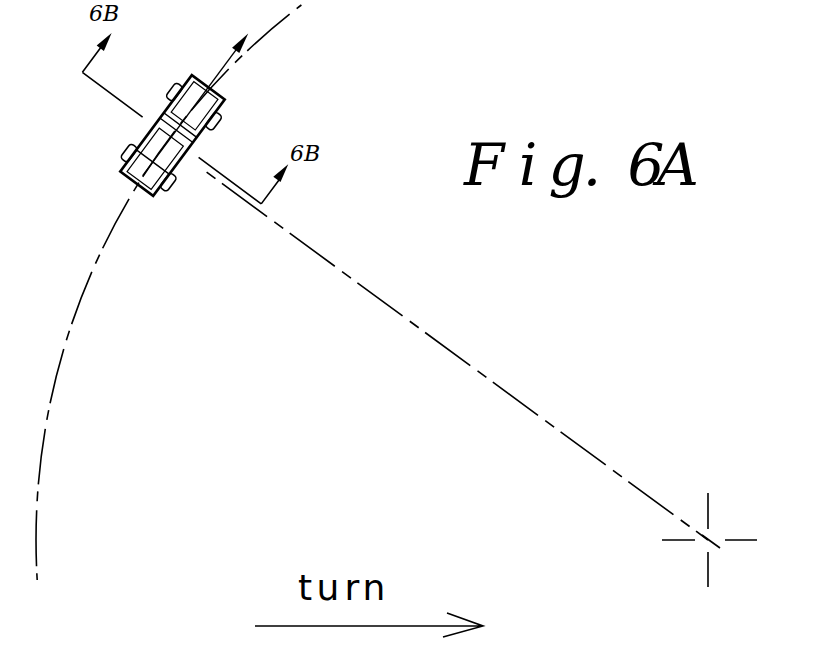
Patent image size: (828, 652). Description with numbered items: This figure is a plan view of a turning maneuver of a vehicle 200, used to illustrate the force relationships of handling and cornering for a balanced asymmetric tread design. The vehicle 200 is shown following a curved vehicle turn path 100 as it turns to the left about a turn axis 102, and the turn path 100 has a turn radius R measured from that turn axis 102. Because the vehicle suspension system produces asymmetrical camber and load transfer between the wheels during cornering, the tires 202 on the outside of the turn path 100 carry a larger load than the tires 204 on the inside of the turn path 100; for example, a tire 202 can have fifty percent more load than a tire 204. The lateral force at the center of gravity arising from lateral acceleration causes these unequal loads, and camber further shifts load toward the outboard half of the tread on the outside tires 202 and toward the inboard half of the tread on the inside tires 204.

The vehicle turn path 100 is at (297, 5).
The turn axis 102 is at (709, 538).
The vehicle 200 is at (120, 188).
The tires on the outside of the turn path 202 is at (172, 93).
The tires on the inside of the turn path 204 is at (218, 125).
The turn radius R is at (393, 311).